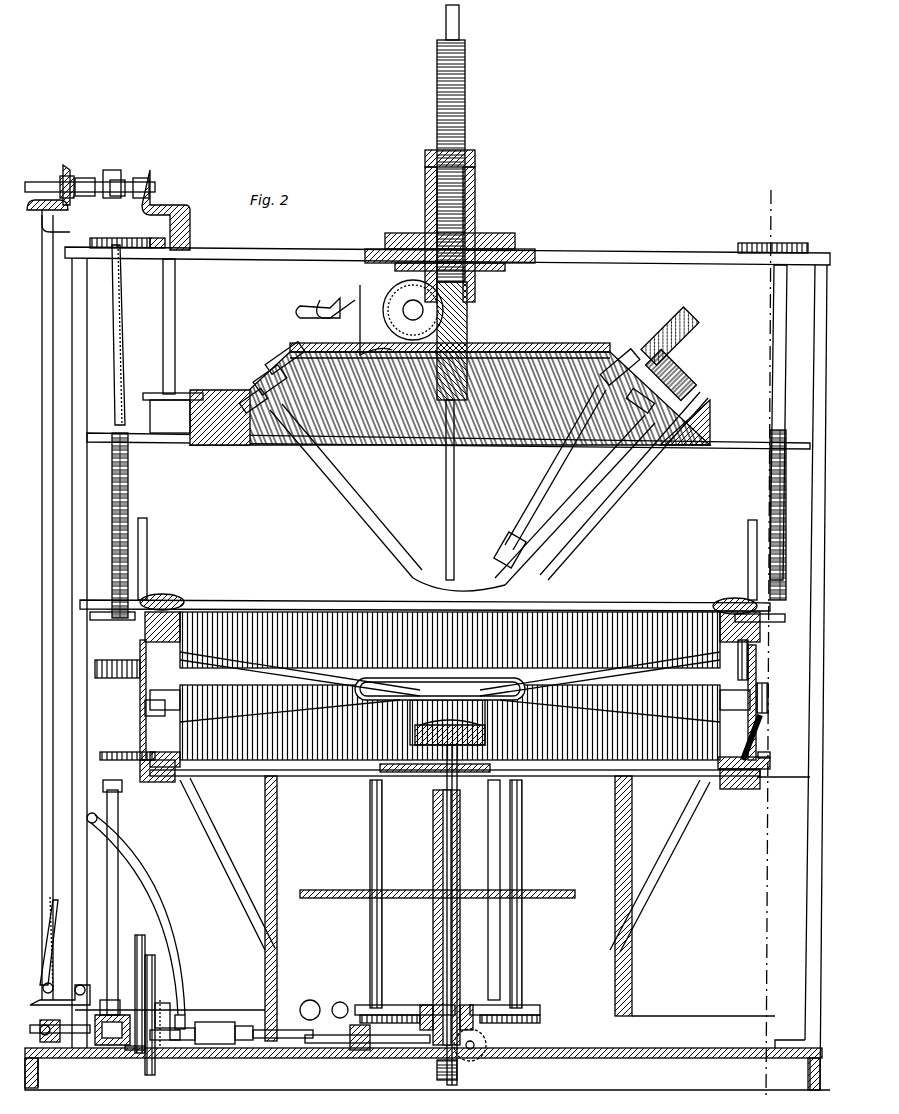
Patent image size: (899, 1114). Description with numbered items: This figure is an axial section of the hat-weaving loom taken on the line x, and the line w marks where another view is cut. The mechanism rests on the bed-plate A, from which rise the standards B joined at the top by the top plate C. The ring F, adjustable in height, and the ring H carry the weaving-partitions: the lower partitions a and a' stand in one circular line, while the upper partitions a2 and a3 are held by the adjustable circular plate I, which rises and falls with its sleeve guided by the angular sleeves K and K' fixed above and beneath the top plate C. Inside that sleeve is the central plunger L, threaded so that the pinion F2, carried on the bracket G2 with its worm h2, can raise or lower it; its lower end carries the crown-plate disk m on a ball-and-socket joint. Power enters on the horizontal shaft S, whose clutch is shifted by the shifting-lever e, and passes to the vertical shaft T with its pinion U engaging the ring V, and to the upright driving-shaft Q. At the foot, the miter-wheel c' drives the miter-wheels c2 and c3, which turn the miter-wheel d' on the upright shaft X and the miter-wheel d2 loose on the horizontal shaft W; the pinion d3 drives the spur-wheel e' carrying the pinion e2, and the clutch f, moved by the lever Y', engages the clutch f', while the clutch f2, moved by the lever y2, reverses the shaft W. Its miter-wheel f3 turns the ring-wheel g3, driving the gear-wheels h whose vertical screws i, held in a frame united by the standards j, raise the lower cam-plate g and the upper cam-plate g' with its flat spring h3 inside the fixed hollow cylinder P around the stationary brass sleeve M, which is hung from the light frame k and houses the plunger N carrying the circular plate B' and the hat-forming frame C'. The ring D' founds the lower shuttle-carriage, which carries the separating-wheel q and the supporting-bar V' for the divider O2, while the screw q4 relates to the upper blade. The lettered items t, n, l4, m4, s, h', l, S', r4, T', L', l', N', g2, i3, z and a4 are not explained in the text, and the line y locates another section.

The top plate C is at (447, 255).
The upright driving-shaft Q is at (46, 607).
The standard B is at (427, 674).
The bed-plate A is at (423, 1060).
The horizontal shaft W is at (769, 649).
The ring H is at (448, 437).
The ring F is at (425, 598).
The light frame k is at (455, 765).
The clutch f is at (451, 143).
The angular sleeve K' is at (457, 226).
The supporting-bar V' is at (549, 249).
The angular sleeve K is at (460, 341).
The bracket G2 is at (401, 317).
The pinion F2 is at (421, 310).
The stationary ring-wheel g3 is at (325, 302).
The adjustable circular plate I is at (450, 392).
The partition a2 is at (220, 417).
The pinion U is at (173, 413).
The clamp t is at (256, 380).
The partition a3 is at (277, 358).
The pivot n is at (451, 411).
The central plunger L is at (462, 495).
The link rod l4 is at (550, 476).
The link m4 is at (564, 492).
The screw q4 is at (670, 353).
The partition a is at (450, 538).
The partition a' is at (452, 521).
The shaft s is at (90, 185).
The worm h2 is at (75, 176).
The flat spring h3 is at (48, 213).
The bracket h' is at (166, 210).
The collar l is at (112, 177).
The shifting-lever e is at (115, 320).
The ring V is at (449, 238).
The vertical shaft T is at (475, 419).
The spring S' is at (127, 525).
The horizontal shaft S is at (771, 515).
The rod r4 is at (449, 559).
The bar T' is at (443, 603).
The hat-forming frame C' is at (290, 700).
The crown-plate disk m is at (150, 701).
The divider O2 is at (450, 686).
The circular plate B' is at (450, 732).
The separating-wheel q is at (744, 700).
The gear L' is at (769, 695).
The link l' is at (758, 737).
The ring D' is at (764, 763).
The line y is at (140, 767).
The fixed hollow cylinder P is at (425, 908).
The tube N' is at (436, 914).
The plunger N is at (448, 915).
The stationary brass sleeve M is at (454, 974).
The lower cam-plate g is at (437, 886).
The vertical screw i is at (448, 894).
The standard j is at (491, 890).
The upper cam-plate g' is at (447, 1005).
The bearing g2 is at (442, 1008).
The line w is at (365, 1025).
The roller i3 is at (340, 1002).
The gear-wheel h is at (488, 1044).
The line x is at (445, 865).
The upright shaft X is at (112, 897).
The lever Y' is at (136, 914).
The lever y2 is at (52, 943).
The spur-wheel e' is at (145, 994).
The pinion e2 is at (156, 1015).
The miter-wheel c' is at (59, 999).
The miter-wheel c2 is at (60, 1024).
The miter-wheel c3 is at (112, 1030).
The miter-wheel d' is at (110, 1003).
The miter-wheel d2 is at (165, 1037).
The pinion d3 is at (135, 1055).
The clutch f' is at (211, 1033).
The miter-wheel f3 is at (283, 1026).
The clutch f2 is at (36, 1033).
The rod z is at (173, 1022).
The block a4 is at (184, 1014).